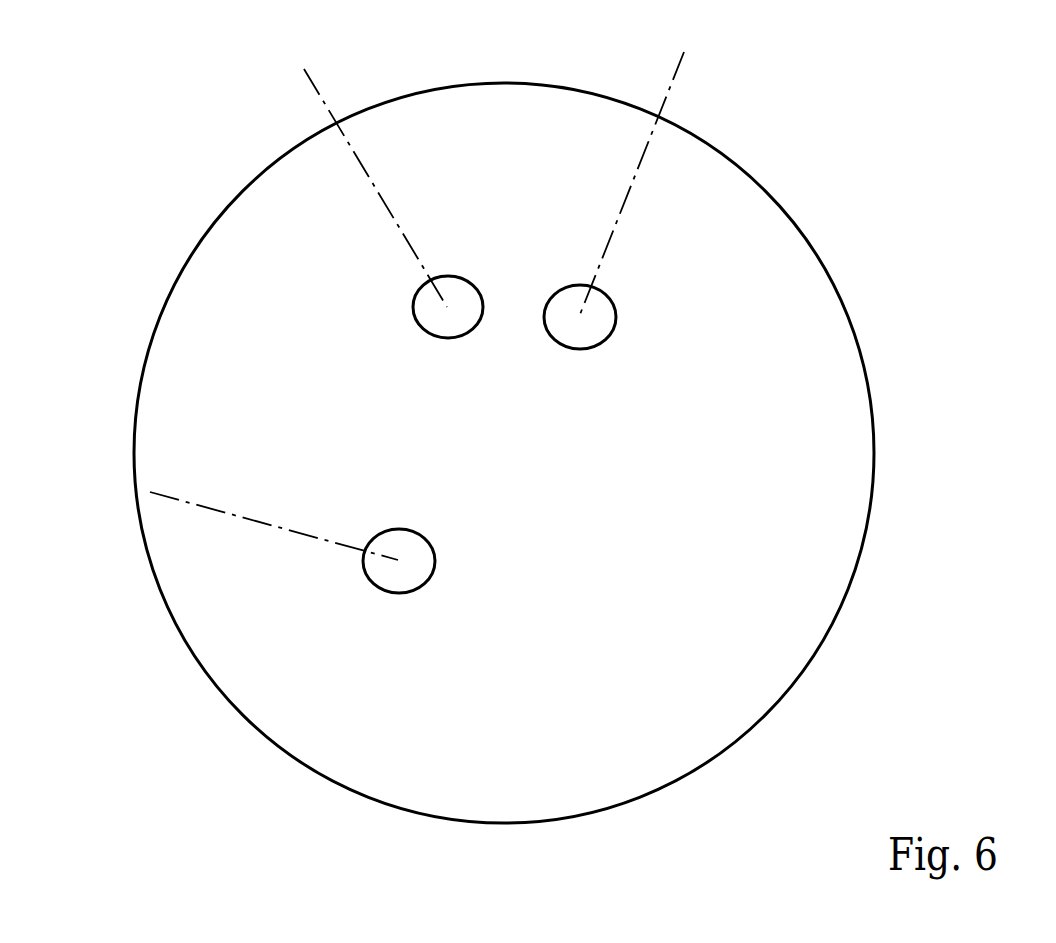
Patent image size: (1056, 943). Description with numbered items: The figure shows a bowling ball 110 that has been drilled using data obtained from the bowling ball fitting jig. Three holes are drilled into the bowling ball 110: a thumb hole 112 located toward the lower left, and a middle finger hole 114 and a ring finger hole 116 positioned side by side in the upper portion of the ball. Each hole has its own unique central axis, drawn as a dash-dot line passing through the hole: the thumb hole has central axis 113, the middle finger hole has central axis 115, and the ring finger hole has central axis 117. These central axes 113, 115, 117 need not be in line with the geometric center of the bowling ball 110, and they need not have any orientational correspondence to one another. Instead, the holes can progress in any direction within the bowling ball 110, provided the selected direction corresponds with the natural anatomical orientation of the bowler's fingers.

The bowling ball 110 is at (752, 128).
The thumb hole 112 is at (405, 593).
The central axis 113 is at (270, 527).
The middle finger hole 114 is at (452, 277).
The central axis 115 is at (371, 191).
The ring finger hole 116 is at (612, 298).
The central axis 117 is at (632, 185).